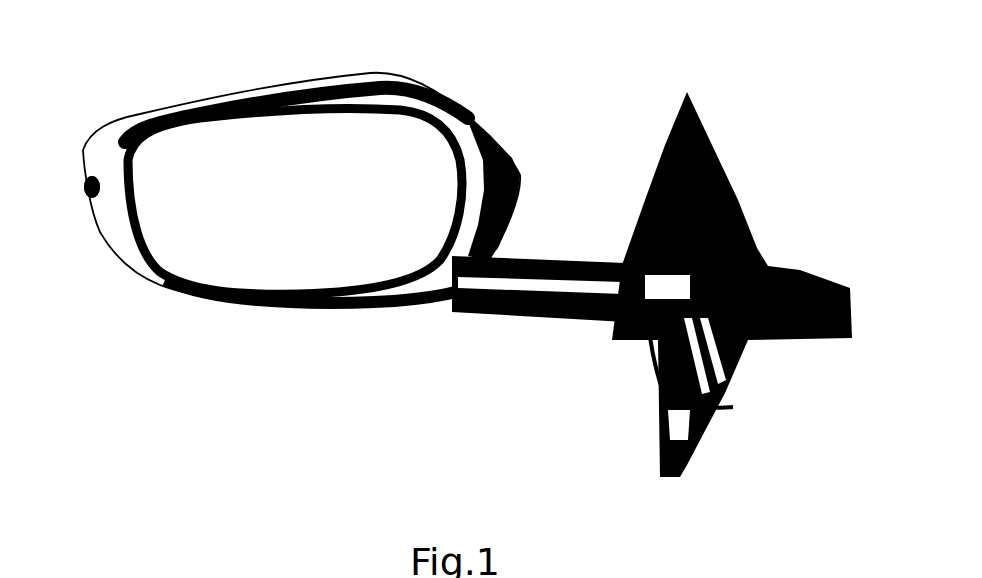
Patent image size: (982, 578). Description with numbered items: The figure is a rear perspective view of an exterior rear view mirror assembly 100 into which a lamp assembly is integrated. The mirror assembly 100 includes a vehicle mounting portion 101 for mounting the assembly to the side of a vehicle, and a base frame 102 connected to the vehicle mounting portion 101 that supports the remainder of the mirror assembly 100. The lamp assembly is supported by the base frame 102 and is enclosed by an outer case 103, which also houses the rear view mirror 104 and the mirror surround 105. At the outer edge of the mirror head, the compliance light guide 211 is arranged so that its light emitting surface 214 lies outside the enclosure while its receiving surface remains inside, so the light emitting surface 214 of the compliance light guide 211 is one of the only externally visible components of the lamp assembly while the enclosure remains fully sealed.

The exterior rear view mirror assembly 100 is at (440, 244).
The vehicle mounting portion 101 is at (733, 166).
The base frame 102 is at (517, 330).
The outer case 103 is at (515, 156).
The rear view mirror 104 is at (321, 211).
The mirror surround 105 is at (133, 250).
The compliance light guide 211 is at (80, 190).
The light emitting surface 214 is at (66, 257).